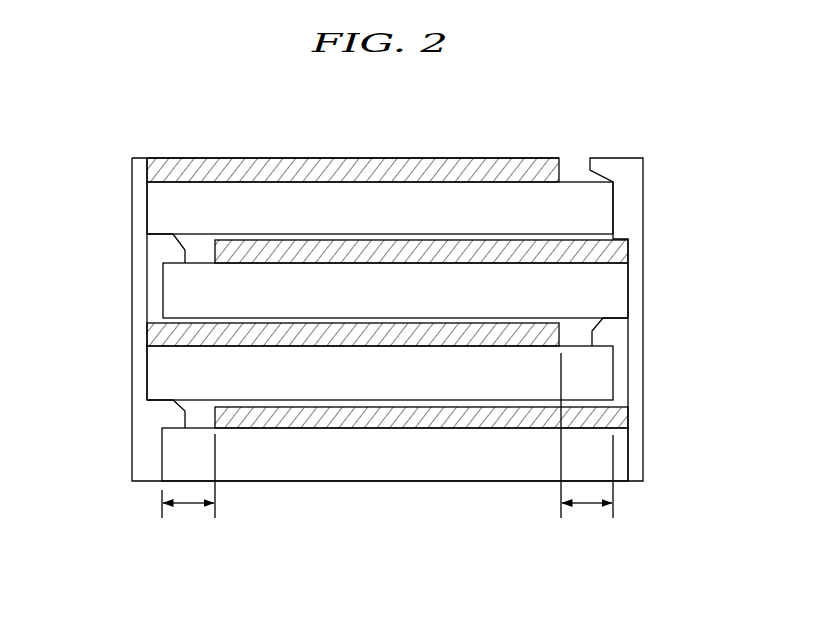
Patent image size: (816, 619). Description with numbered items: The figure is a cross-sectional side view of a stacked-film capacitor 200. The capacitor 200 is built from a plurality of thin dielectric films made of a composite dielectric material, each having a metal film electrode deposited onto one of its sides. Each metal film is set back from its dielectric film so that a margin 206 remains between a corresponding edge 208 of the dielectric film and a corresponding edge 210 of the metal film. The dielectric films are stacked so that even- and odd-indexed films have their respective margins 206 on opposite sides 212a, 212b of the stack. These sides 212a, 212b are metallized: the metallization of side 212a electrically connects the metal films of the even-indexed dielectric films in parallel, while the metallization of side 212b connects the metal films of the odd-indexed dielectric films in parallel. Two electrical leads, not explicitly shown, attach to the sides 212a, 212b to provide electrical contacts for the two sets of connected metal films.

The stacked-film capacitor 200 is at (397, 91).
The margin 206 is at (188, 505).
The edge of the dielectric film 208 is at (615, 375).
The edge of the metal film 210 is at (563, 337).
The side of the stack 212a is at (130, 245).
The side of the stack 212b is at (645, 197).